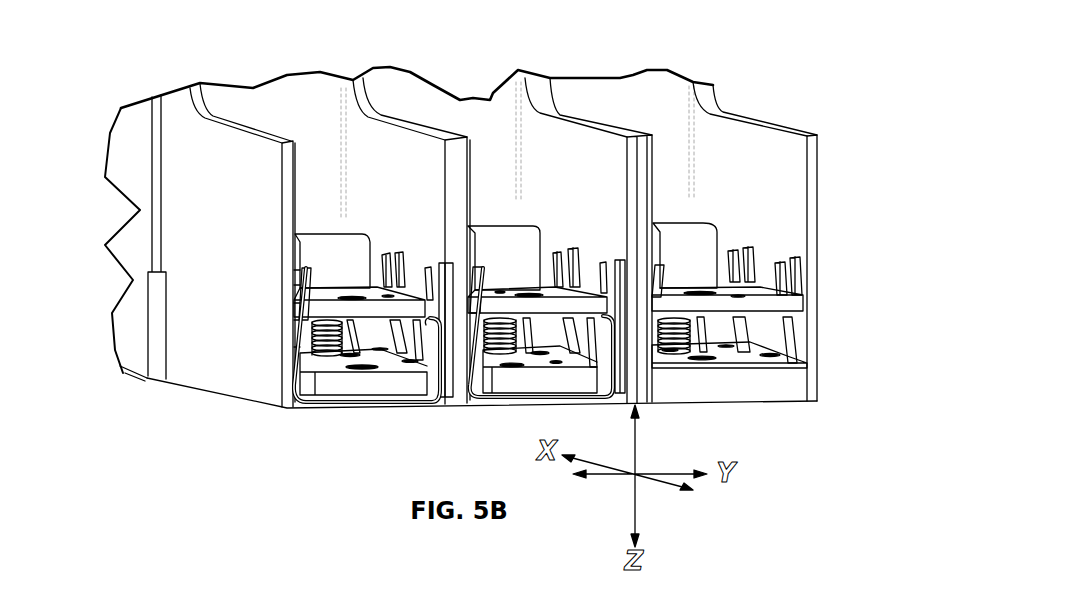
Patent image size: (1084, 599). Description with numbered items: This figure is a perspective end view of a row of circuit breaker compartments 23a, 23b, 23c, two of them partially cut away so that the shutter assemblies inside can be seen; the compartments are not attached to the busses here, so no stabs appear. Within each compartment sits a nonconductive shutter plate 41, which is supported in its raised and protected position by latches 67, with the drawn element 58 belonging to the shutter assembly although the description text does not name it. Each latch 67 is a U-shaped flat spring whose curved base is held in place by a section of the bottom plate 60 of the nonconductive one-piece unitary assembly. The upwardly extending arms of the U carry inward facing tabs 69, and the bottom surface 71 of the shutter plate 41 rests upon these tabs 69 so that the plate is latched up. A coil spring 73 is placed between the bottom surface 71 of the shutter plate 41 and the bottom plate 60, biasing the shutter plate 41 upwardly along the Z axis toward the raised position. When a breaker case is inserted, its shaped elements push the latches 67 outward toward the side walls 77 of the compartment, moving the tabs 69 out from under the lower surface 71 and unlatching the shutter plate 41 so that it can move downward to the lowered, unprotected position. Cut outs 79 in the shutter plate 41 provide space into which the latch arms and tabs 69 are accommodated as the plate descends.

The circuit breaker compartment 23a is at (235, 120).
The circuit breaker compartment 23b is at (490, 100).
The circuit breaker compartment 23c is at (633, 82).
The side walls 77 is at (295, 162).
The shutter plate 41 is at (347, 260).
The upper contact plate 58 is at (395, 292).
The cut outs 79 is at (572, 250).
The latches 67 is at (603, 262).
The coil spring 73 is at (350, 352).
The bottom plate 60 is at (503, 390).
The bottom surface 71 is at (602, 320).
The tabs 69 is at (430, 322).